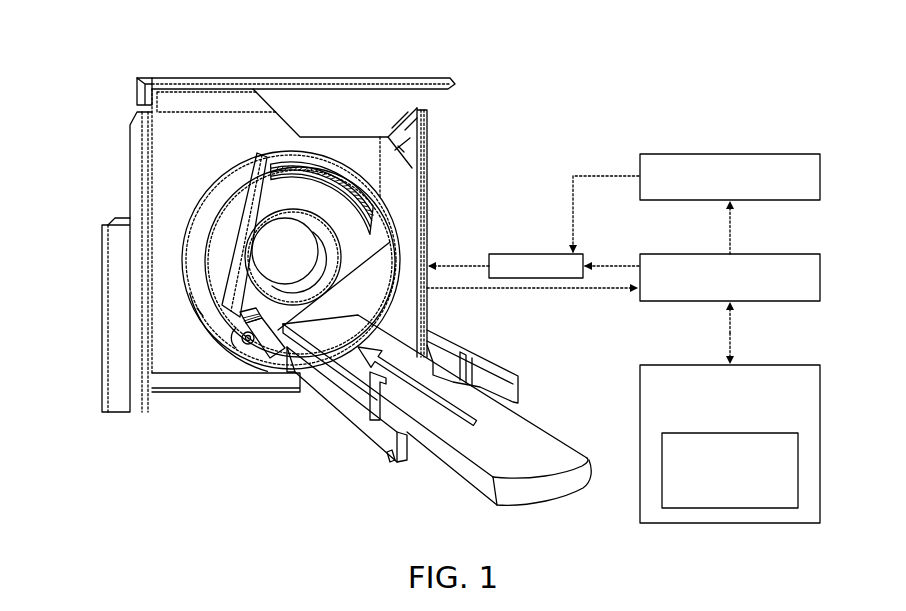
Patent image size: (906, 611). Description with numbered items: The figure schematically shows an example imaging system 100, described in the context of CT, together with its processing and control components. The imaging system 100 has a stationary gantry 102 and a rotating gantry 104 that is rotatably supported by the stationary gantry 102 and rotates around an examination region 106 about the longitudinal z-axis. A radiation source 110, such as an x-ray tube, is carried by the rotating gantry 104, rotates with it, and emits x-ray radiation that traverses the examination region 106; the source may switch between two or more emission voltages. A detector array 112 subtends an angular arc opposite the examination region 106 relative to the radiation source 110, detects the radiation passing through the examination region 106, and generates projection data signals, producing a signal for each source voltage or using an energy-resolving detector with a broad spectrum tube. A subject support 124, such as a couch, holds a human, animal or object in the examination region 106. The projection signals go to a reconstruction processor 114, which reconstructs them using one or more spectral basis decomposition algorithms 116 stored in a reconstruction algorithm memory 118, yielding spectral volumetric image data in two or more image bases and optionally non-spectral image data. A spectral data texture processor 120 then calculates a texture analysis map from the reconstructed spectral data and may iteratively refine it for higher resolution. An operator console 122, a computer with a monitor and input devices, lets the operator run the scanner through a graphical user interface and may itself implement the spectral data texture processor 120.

The imaging system 100 is at (80, 88).
The stationary gantry 102 is at (143, 174).
The rotating gantry 104 is at (260, 203).
The examination region 106 is at (301, 258).
The radiation source 110 is at (244, 352).
The detector array 112 is at (372, 207).
The reconstruction processor 114 is at (820, 277).
The spectral basis decomposition algorithm 116 is at (798, 472).
The reconstruction algorithm memory 118 is at (820, 400).
The spectral data texture processor 120 is at (820, 177).
The operator console 122 is at (536, 254).
The subject support 124 is at (547, 447).